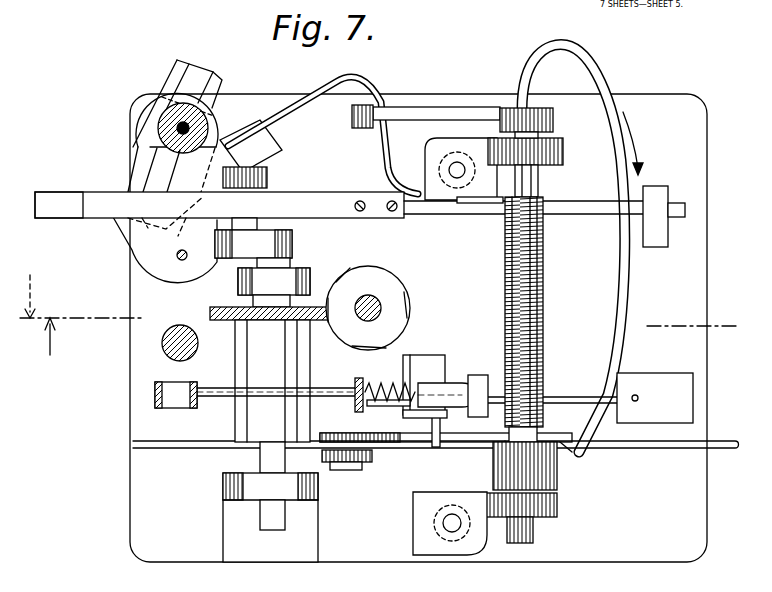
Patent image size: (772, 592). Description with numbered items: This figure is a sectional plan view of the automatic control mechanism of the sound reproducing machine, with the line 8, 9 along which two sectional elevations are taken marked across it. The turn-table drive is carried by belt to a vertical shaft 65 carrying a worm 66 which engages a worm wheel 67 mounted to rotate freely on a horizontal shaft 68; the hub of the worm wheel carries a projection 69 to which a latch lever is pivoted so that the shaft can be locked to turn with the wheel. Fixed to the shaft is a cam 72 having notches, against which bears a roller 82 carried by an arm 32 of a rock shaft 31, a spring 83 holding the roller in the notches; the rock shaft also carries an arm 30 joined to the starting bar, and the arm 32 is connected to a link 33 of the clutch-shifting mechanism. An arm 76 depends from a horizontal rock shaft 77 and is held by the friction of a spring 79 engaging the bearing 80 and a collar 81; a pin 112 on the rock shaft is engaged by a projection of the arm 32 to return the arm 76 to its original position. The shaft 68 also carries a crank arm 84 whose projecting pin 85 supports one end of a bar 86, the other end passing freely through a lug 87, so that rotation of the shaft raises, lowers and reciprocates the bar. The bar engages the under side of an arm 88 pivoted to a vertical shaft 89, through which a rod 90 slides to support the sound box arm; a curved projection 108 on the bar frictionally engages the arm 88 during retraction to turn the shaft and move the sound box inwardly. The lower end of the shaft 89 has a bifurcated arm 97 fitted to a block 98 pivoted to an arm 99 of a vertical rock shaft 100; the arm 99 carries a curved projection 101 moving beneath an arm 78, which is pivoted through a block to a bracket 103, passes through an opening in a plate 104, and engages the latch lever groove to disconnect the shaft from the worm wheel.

The section line 8-9 (dotted line arrow) 8 is at (72, 315).
The section line 8-9 (full line arrow) 9 is at (700, 326).
The arm 30 is at (455, 112).
The rock shaft 31 is at (530, 178).
The arm 32 is at (402, 433).
The link 33 is at (645, 448).
The vertical shaft 65 is at (380, 304).
The worm 66 is at (375, 270).
The worm wheel 67 is at (325, 307).
The horizontal shaft 68 is at (300, 270).
The projection 69 is at (320, 388).
The cam 72 is at (183, 448).
The arm 76 is at (156, 406).
The horizontal rock shaft 77 is at (358, 378).
The arm 78 is at (555, 397).
The spring 79 is at (390, 384).
The bearing 80 is at (356, 404).
The collar 81 is at (445, 383).
The roller 82 is at (365, 466).
The spring 83 is at (545, 283).
The crank arm 84 is at (292, 245).
The projecting pin 85 is at (267, 178).
The bar 86 is at (60, 218).
The lug 87 is at (656, 190).
The arm 88 is at (170, 172).
The vertical shaft 89 is at (180, 117).
The rod 90 is at (158, 126).
The bifurcated projecting arm 97 is at (135, 178).
The block 98 is at (131, 246).
The arm 99 is at (176, 255).
The vertical rock shaft 100 is at (182, 262).
The projection 101 is at (350, 84).
The bracket 103 is at (662, 382).
The plate 104 is at (408, 355).
The curved projection 108 is at (277, 200).
The pin 112 is at (441, 424).